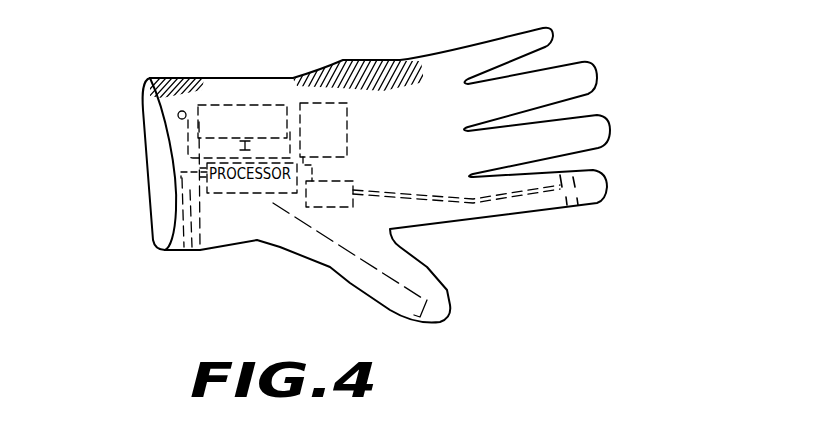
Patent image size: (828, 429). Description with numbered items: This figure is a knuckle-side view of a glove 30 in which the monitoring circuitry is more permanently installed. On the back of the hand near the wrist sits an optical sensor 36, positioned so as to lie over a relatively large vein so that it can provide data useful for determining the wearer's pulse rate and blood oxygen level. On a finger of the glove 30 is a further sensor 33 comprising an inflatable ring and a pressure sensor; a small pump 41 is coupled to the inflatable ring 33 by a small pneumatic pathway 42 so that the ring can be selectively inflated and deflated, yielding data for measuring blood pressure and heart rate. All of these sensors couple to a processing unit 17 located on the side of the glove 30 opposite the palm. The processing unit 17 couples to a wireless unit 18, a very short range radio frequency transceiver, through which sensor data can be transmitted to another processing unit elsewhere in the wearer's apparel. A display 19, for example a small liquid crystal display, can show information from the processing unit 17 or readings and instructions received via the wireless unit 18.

The processing unit 17 is at (228, 196).
The wireless unit 18 is at (320, 100).
The display 19 is at (218, 104).
The glove 30 is at (254, 79).
The inflatable ring sensor 33 is at (570, 203).
The optical sensor 36 is at (178, 115).
The pump 41 is at (313, 208).
The pneumatic pathway 42 is at (497, 200).